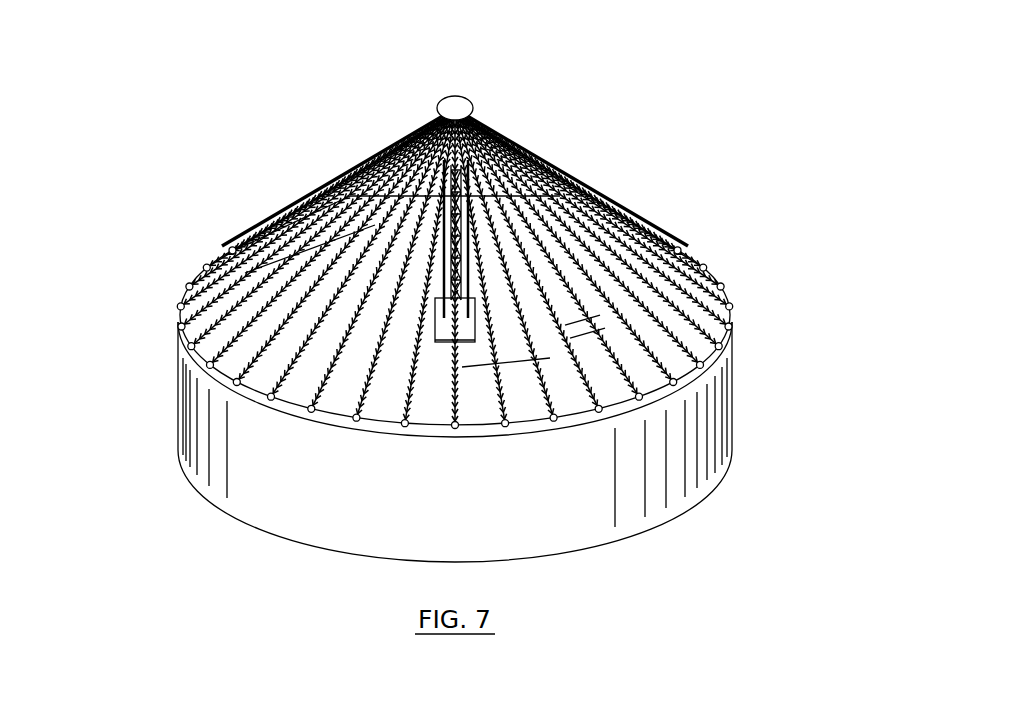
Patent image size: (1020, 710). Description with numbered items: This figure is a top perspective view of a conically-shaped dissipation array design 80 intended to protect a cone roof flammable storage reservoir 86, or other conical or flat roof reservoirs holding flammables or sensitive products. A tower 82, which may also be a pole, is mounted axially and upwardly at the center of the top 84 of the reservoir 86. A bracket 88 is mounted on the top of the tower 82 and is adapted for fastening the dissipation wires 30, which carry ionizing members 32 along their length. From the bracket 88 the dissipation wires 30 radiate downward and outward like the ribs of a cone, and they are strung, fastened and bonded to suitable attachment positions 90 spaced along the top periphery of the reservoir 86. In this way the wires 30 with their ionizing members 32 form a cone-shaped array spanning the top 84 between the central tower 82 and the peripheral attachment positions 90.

The design 80 is at (592, 160).
The tower 82 is at (436, 300).
The top 84 is at (407, 385).
The reservoir 86 is at (527, 501).
The bracket 88 is at (470, 102).
The dissipation wires 30 is at (247, 293).
The ionizing members 32 is at (228, 250).
The attachment positions 90 is at (210, 355).